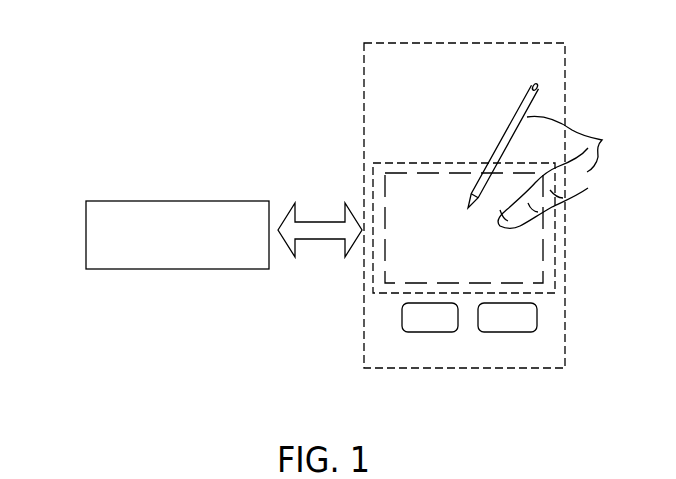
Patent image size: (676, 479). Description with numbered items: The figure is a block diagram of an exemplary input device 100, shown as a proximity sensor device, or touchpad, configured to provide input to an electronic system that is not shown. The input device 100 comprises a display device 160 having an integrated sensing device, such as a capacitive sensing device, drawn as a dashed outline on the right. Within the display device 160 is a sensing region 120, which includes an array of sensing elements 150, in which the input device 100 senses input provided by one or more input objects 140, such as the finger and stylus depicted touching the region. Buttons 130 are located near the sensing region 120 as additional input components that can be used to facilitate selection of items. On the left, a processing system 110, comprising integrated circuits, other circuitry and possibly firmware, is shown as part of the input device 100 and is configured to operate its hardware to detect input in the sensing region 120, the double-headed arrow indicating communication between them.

The input device 100 is at (315, 77).
The processing system 110 is at (86, 229).
The sensing region 120 is at (555, 245).
The buttons 130 is at (433, 332).
The input objects 140 is at (598, 140).
The array of sensing elements 150 is at (422, 173).
The display device 160 is at (565, 66).